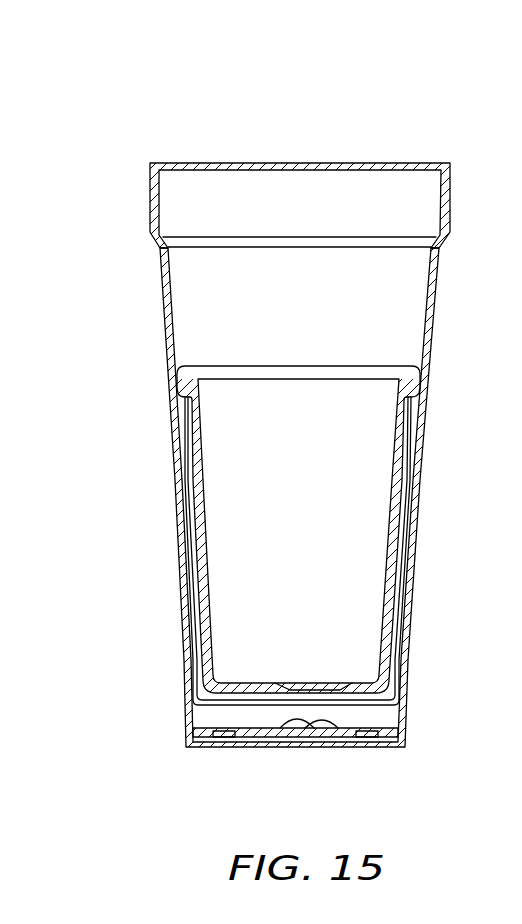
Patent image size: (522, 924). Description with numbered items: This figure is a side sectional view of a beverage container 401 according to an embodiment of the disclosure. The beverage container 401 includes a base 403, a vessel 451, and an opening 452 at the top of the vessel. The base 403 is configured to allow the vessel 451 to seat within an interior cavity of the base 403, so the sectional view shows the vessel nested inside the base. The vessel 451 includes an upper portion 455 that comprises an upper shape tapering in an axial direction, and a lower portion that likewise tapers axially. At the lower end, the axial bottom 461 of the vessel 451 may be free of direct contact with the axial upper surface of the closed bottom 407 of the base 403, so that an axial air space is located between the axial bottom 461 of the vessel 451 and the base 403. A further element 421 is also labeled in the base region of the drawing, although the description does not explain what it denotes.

The beverage container 401 is at (208, 95).
The vessel 451 is at (103, 330).
The opening 452 is at (355, 162).
The upper portion 455 is at (157, 310).
The base 403 is at (123, 592).
The axial bottom 461 is at (188, 711).
The closed bottom 407 is at (241, 741).
The base insert 421 is at (337, 724).